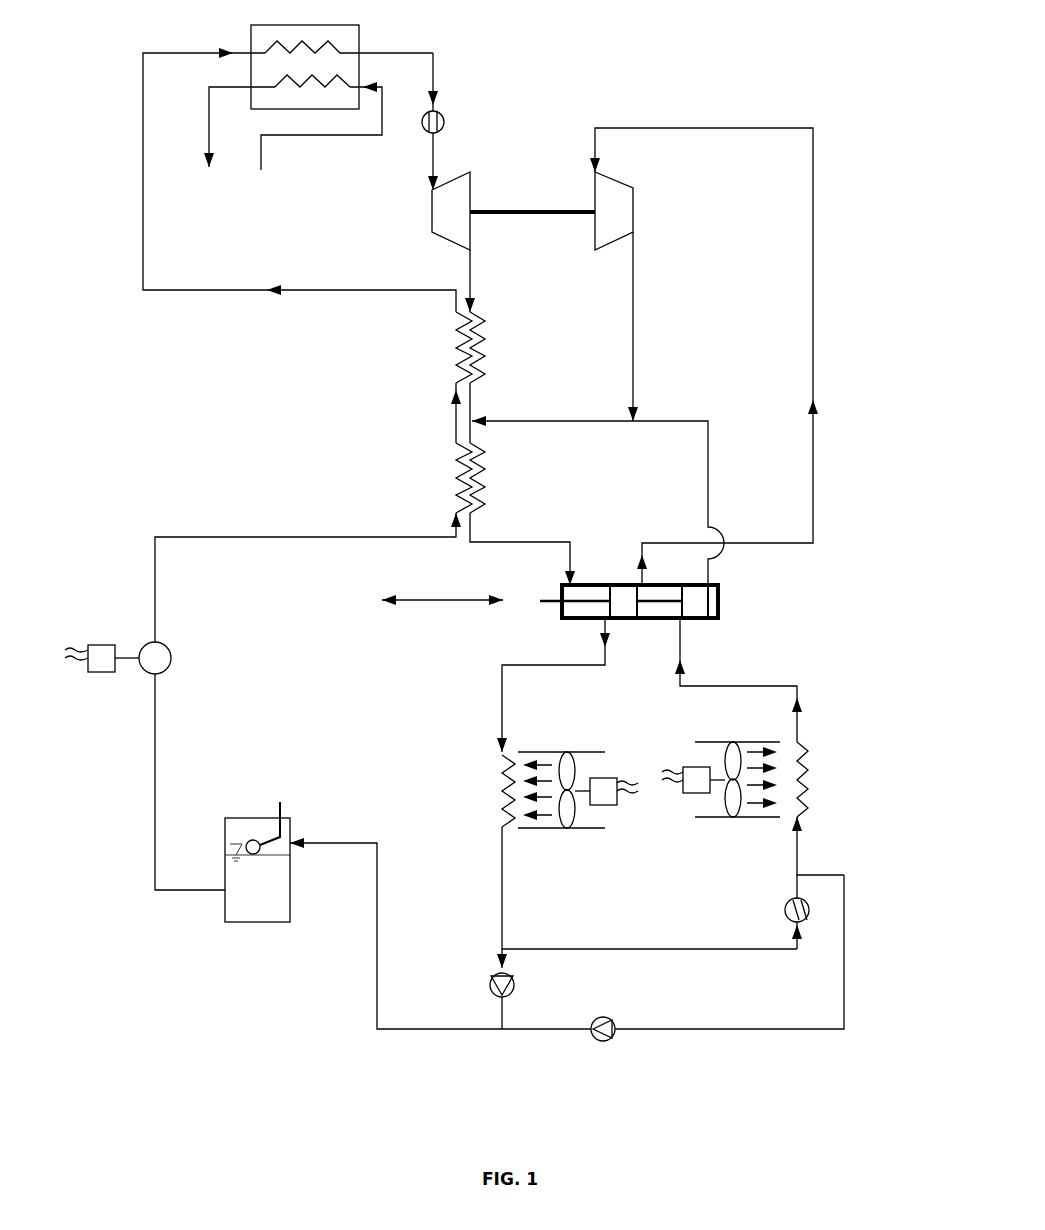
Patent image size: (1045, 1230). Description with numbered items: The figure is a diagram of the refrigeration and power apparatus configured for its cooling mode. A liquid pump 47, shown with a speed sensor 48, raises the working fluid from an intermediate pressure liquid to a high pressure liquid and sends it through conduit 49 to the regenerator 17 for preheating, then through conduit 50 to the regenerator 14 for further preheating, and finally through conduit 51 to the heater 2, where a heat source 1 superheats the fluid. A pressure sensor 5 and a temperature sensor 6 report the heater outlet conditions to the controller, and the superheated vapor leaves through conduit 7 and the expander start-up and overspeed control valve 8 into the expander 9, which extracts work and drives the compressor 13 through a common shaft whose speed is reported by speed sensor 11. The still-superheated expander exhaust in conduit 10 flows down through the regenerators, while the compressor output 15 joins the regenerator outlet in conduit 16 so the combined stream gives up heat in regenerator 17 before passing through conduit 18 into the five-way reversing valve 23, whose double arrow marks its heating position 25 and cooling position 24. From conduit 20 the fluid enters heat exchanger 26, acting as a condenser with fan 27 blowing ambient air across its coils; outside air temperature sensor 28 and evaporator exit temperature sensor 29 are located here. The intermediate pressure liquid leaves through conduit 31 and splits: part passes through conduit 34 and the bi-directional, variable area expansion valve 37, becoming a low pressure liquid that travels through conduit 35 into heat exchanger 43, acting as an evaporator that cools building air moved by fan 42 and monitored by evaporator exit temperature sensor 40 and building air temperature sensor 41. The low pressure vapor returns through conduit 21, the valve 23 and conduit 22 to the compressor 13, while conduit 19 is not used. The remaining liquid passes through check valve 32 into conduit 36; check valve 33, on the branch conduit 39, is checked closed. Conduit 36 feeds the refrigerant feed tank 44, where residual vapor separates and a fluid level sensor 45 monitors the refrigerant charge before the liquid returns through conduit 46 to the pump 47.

The heat source 1 is at (278, 139).
The heater 2 is at (342, 54).
The pressure sensor 5 is at (387, 53).
The temperature sensor 6 is at (423, 53).
The heater outlet line 7 is at (429, 121).
The expander start-up and overspeed control valve 8 is at (497, 102).
The expander 9 is at (401, 211).
The conduit 10 is at (460, 281).
The speed sensor 11 is at (533, 214).
The compressor 13 is at (687, 211).
The regenerator 14 is at (402, 347).
The compressor output 15 is at (647, 326).
The conduit 16 is at (552, 409).
The regenerator 17 is at (402, 478).
The conduit 18 is at (528, 549).
The conduit 19 is at (690, 503).
The conduit 20 is at (569, 685).
The conduit 21 is at (738, 680).
The conduit 22 is at (704, 356).
The five-way reversing valve 23 is at (715, 601).
The cooling position 24 is at (499, 588).
The heating position 25 is at (396, 588).
The heat exchanger 26 is at (494, 790).
The fan 27 is at (598, 790).
The outside air temperature sensor 28 is at (593, 822).
The evaporator exit temperature sensor 29 is at (502, 697).
The conduit 31 is at (492, 897).
The check valve 32 is at (459, 998).
The check valve 33 is at (606, 1006).
The conduit 34 is at (649, 937).
The conduit 35 is at (818, 846).
The conduit 36 is at (440, 946).
The bi-directional, variable area expansion valve 37 is at (728, 912).
The line 39 is at (729, 952).
The evaporator exit temperature sensor 40 is at (797, 713).
The building air temperature sensor 41 is at (710, 810).
The fan 42 is at (701, 779).
The heat exchanger 43 is at (820, 779).
The refrigerant feed tank 44 is at (251, 895).
The fluid level sensor 45 is at (241, 800).
The conduit 46 is at (177, 782).
The liquid pump 47 is at (163, 657).
The speed sensor 48 is at (127, 655).
The conduit 49 is at (308, 576).
The conduit 50 is at (451, 413).
The conduit 51 is at (299, 180).